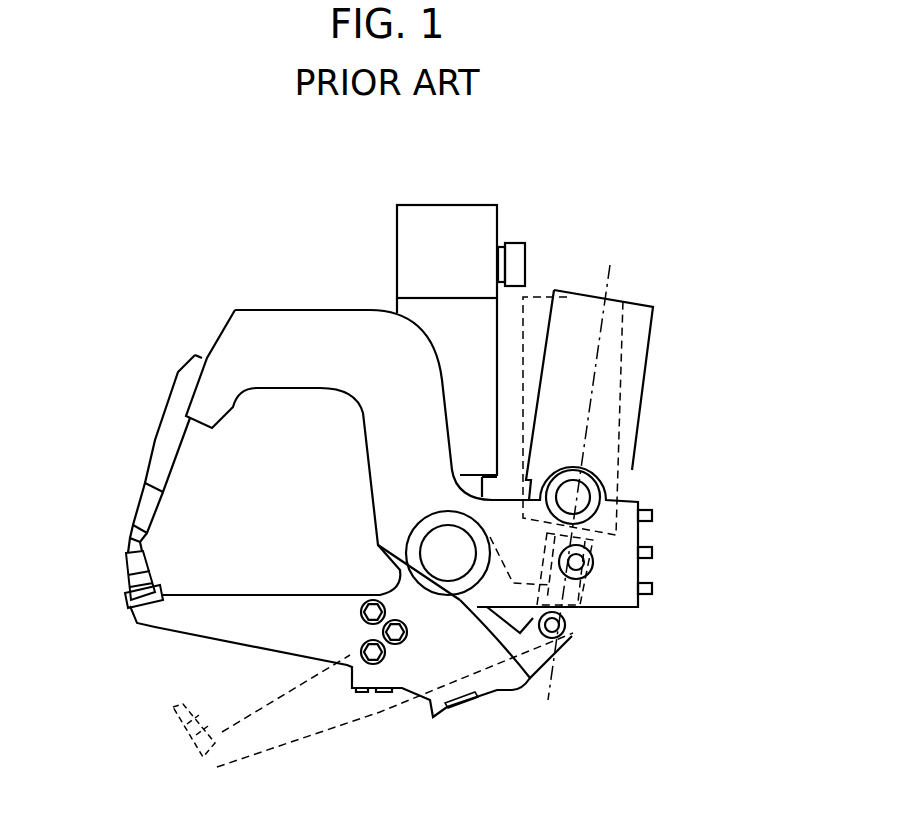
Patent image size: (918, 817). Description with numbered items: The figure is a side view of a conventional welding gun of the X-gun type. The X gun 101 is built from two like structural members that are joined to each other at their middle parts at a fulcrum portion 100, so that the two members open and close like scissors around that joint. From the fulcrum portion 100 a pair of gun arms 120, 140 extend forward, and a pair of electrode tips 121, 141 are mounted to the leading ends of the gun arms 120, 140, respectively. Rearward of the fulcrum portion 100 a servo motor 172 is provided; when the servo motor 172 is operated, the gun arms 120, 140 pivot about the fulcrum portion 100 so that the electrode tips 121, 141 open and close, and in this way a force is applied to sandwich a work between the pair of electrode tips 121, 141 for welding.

The X gun 101 is at (620, 176).
The fulcrum portion 100 is at (448, 562).
The gun arm 120 is at (281, 327).
The electrode tip 121 is at (148, 505).
The gun arm 140 is at (217, 625).
The electrode tip 141 is at (133, 565).
The servo motor 172 is at (638, 357).